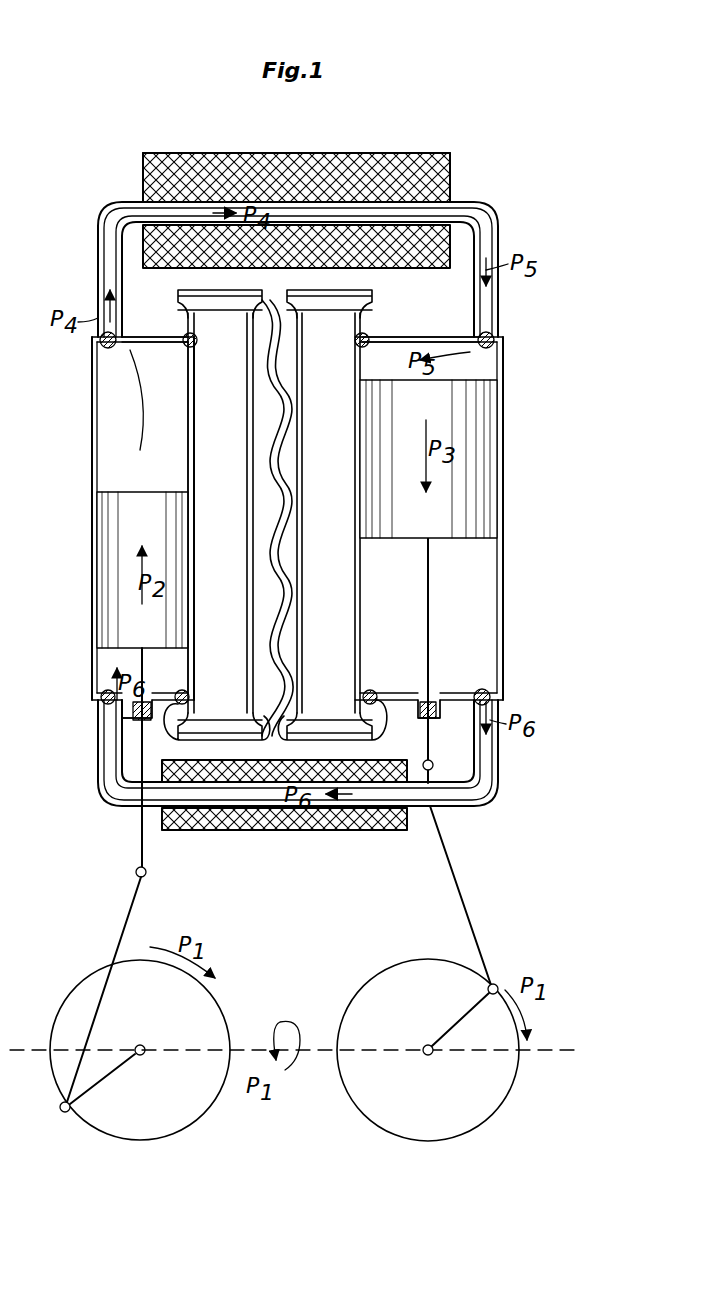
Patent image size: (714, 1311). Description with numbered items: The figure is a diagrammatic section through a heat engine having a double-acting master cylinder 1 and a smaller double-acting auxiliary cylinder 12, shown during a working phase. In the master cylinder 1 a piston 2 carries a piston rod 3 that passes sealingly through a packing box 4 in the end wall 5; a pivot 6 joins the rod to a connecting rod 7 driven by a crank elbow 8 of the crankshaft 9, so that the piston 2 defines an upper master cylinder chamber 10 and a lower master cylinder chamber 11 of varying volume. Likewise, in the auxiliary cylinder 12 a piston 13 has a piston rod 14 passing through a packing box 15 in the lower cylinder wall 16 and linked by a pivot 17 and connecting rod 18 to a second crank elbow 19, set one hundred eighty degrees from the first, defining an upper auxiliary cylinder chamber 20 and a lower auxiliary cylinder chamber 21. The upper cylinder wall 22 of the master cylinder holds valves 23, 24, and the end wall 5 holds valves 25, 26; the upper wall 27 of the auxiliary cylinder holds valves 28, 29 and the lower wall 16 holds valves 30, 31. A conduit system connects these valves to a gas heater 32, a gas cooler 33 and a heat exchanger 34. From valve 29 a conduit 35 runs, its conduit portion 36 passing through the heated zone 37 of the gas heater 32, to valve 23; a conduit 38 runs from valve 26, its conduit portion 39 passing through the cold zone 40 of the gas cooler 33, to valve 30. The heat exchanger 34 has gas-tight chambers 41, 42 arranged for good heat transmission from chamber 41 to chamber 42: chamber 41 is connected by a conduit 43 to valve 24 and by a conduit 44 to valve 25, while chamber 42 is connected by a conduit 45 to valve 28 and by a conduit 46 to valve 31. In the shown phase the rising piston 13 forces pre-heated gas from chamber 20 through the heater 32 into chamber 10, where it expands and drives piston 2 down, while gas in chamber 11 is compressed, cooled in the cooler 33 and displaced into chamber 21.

The master cylinder 1 is at (503, 360).
The piston 2 is at (490, 416).
The piston rod 3 is at (428, 590).
The packing box 4 is at (418, 712).
The end wall 5 is at (440, 708).
The pivot 6 is at (433, 762).
The connecting rod 7 is at (464, 896).
The crank elbow 8 is at (462, 1014).
The crankshaft 9 is at (556, 1048).
The upper master cylinder chamber 10 is at (360, 370).
The lower master cylinder chamber 11 is at (497, 570).
The auxiliary cylinder 12 is at (92, 402).
The piston 13 is at (104, 512).
The piston rod 14 is at (142, 846).
The packing box 15 is at (150, 720).
The lower cylinder wall 16 is at (148, 700).
The pivot 17 is at (147, 872).
The connecting rod 18 is at (122, 928).
The second crank elbow 19 is at (108, 1076).
The upper auxiliary cylinder chamber 20 is at (100, 448).
The lower auxiliary cylinder chamber 21 is at (97, 656).
The upper cylinder wall 22 is at (402, 338).
The valve 23 is at (494, 334).
The valve 24 is at (356, 344).
The valve 25 is at (368, 690).
The valve 26 is at (480, 689).
The upper wall 27 is at (152, 326).
The valve 28 is at (194, 342).
The valve 29 is at (104, 346).
The valve 30 is at (101, 712).
The valve 31 is at (184, 690).
The gas heater 32 is at (316, 142).
The gas cooler 33 is at (392, 862).
The heat exchanger 34 is at (334, 454).
The conduit 35 is at (98, 290).
The conduit portion 36 is at (283, 206).
The heated zone 37 is at (375, 163).
The conduit 38 is at (498, 776).
The conduit portion 39 is at (270, 808).
The cold zone 40 is at (300, 818).
The chamber 41 is at (292, 522).
The chamber 42 is at (250, 500).
The conduit 43 is at (352, 296).
The conduit 44 is at (340, 722).
The conduit 45 is at (190, 292).
The conduit 46 is at (236, 720).